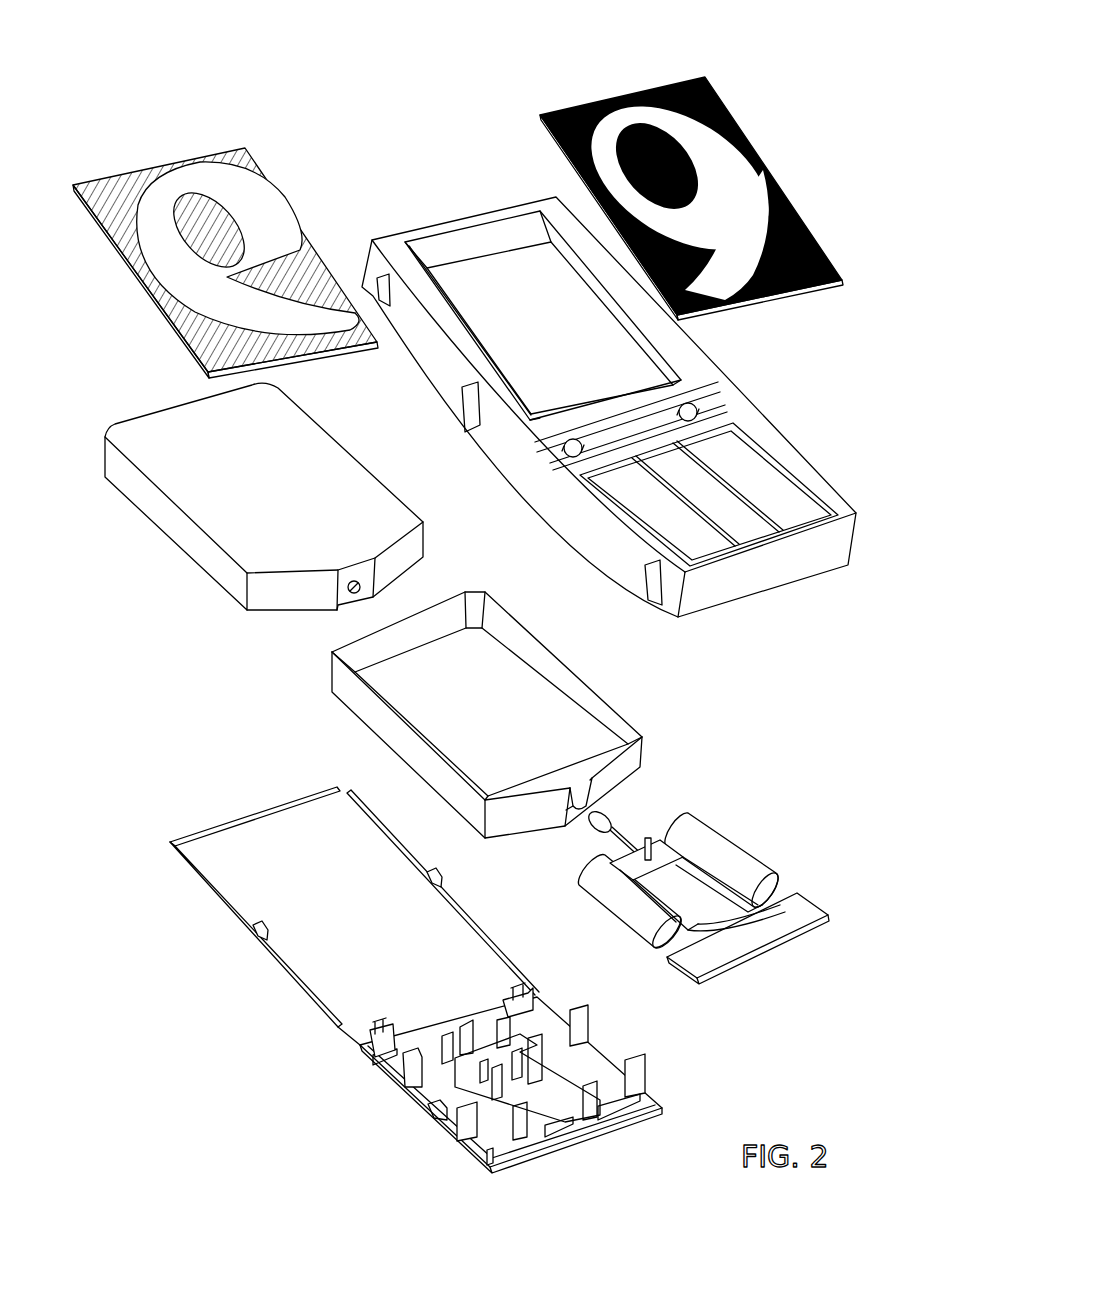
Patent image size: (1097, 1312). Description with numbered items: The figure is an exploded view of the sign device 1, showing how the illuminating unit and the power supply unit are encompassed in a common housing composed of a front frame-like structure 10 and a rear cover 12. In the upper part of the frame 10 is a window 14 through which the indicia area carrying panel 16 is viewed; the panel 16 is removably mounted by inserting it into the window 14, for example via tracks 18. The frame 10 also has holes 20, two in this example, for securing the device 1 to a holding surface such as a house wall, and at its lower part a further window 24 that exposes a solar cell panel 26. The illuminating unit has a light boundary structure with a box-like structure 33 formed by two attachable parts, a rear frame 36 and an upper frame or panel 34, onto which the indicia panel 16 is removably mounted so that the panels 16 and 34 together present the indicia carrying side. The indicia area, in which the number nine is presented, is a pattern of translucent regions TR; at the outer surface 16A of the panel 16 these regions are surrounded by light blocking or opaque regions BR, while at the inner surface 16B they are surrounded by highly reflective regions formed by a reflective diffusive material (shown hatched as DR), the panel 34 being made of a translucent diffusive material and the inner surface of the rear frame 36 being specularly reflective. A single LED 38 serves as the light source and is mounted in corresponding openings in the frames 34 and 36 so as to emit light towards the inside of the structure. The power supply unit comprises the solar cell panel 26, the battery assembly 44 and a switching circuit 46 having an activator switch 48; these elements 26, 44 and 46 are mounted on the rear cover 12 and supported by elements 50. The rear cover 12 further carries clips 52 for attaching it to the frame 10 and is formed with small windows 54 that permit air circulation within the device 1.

The device 1 is at (410, 108).
The front frame-like structure 10 is at (387, 240).
The rear cover 12 is at (217, 848).
The window 14 is at (477, 278).
The indicia area carrying panel 16 is at (180, 143).
The outer surface of the panel 16A is at (797, 217).
The inner surface of the panel 16B is at (125, 188).
The translucent regions TR is at (190, 238).
The light blocking or opaque regions BR is at (778, 185).
The diffusing region DR is at (190, 305).
The tracks 18 is at (683, 380).
The holes 20 is at (695, 410).
The further window 24 is at (750, 462).
The solar cell panel 26 is at (767, 937).
The box-like structure 33 is at (251, 656).
The upper frame or panel 34 is at (200, 503).
The rear frame 36 is at (427, 708).
The LED 38 is at (608, 812).
The battery assembly 44 is at (712, 852).
The switching circuit 46 is at (593, 887).
The activator switch 48 is at (612, 866).
The elements 50 is at (540, 1102).
The clips 52 is at (253, 932).
The small windows 54 is at (385, 1060).